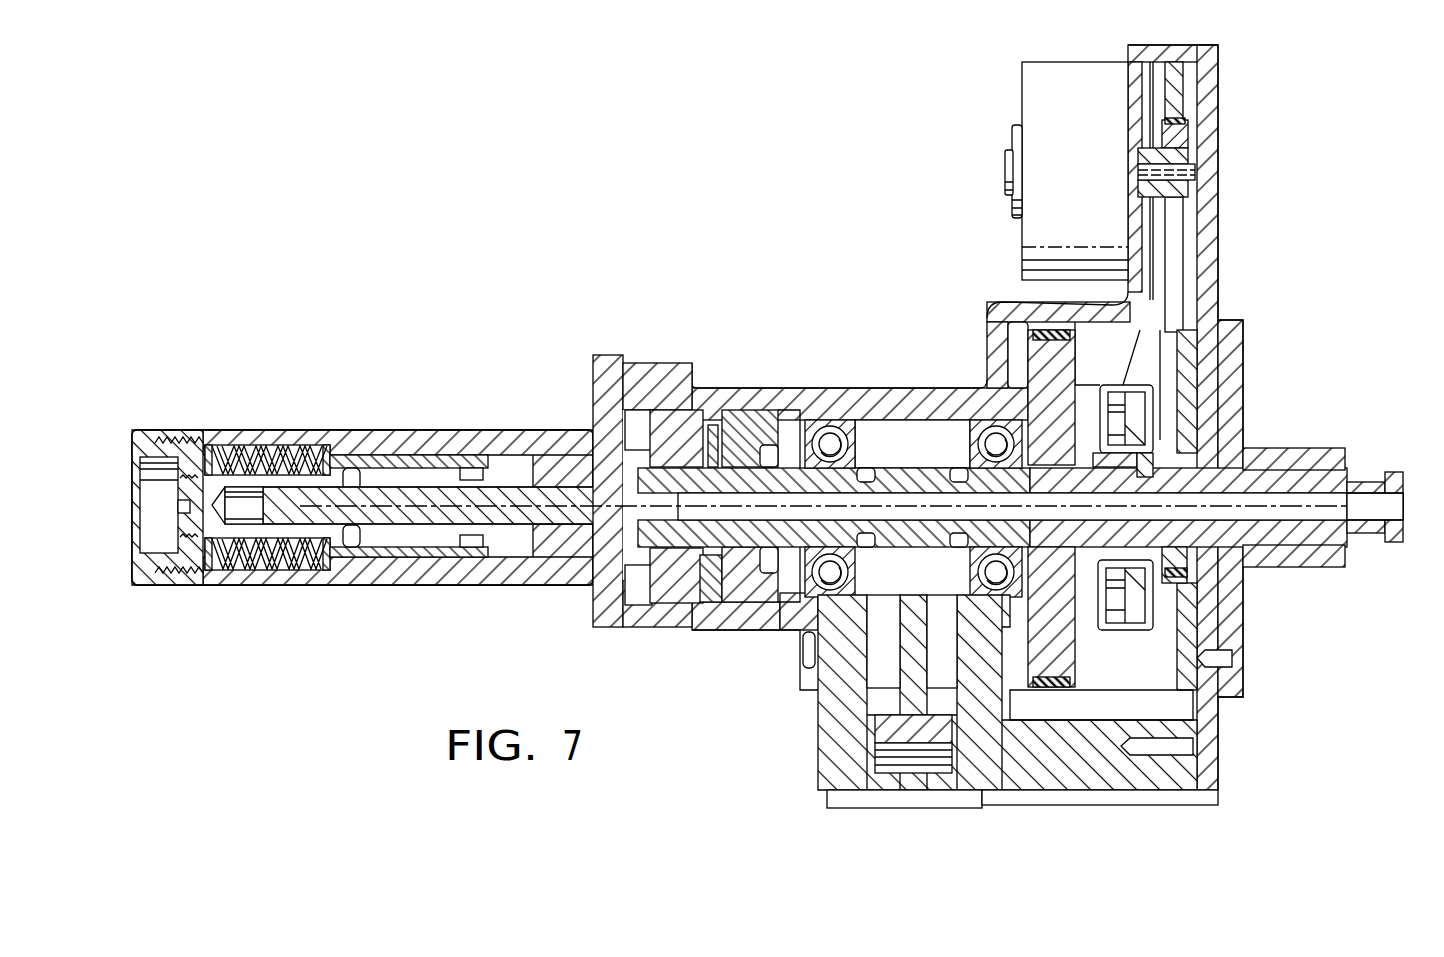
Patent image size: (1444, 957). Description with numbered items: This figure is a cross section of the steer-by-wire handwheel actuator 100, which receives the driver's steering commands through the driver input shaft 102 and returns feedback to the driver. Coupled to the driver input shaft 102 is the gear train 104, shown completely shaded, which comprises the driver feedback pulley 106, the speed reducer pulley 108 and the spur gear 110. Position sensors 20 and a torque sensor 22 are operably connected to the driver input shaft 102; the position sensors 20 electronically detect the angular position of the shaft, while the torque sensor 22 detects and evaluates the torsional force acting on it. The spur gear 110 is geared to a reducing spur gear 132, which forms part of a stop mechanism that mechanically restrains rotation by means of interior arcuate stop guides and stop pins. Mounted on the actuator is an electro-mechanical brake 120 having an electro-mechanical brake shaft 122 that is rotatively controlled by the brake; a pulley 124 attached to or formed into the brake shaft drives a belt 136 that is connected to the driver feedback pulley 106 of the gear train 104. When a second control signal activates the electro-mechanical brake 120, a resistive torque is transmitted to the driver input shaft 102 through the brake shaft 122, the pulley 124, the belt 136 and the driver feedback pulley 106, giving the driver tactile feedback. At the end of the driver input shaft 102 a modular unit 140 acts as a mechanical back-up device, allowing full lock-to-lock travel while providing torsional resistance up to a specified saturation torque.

The handwheel actuator 100 is at (578, 273).
The driver input shaft 102 is at (1373, 530).
The gear train 104 is at (857, 812).
The driver feedback pulley 106 is at (1187, 560).
The speed reducer pulley 108 is at (1040, 360).
The spur gear 110 is at (916, 468).
The electro-mechanical brake 120 is at (1035, 68).
The electro-mechanical brake shaft 122 is at (1190, 168).
The pulley 124 is at (1185, 130).
The reducing spur gear 132 is at (880, 728).
The belt 136 is at (1178, 265).
The modular unit 140 is at (366, 424).
The position sensors 20 is at (735, 420).
The torque sensor 22 is at (1140, 405).